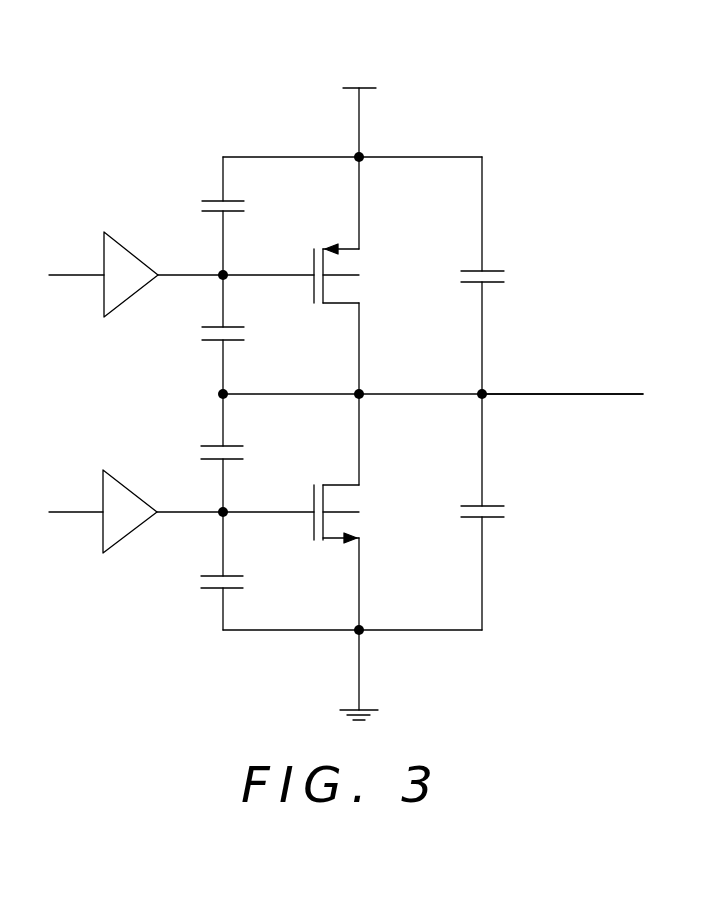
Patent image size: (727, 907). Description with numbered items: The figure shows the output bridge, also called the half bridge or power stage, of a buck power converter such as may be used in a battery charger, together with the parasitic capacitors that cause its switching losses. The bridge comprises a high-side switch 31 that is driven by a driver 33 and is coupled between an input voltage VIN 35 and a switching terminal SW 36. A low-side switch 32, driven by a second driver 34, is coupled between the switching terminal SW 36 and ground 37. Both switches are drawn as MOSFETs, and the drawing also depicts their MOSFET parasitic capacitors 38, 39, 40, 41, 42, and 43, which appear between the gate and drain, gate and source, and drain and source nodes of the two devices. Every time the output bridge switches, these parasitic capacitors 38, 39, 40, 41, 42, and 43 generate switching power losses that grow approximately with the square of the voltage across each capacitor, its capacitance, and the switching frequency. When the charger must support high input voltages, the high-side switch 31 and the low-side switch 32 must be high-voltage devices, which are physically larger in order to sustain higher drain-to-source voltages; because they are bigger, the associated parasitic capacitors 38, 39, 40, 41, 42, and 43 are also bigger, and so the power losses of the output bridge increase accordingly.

The high-side switch 31 is at (362, 277).
The low-side switch 32 is at (361, 508).
The driver 33 is at (104, 300).
The driver 34 is at (103, 538).
The input voltage VIN 35 is at (369, 107).
The switching terminal SW 36 is at (613, 391).
The ground 37 is at (367, 695).
The parasitic capacitor 38 is at (197, 582).
The parasitic capacitor 39 is at (197, 451).
The parasitic capacitor 40 is at (197, 333).
The parasitic capacitor 41 is at (197, 204).
The parasitic capacitor 42 is at (510, 277).
The parasitic capacitor 43 is at (510, 512).